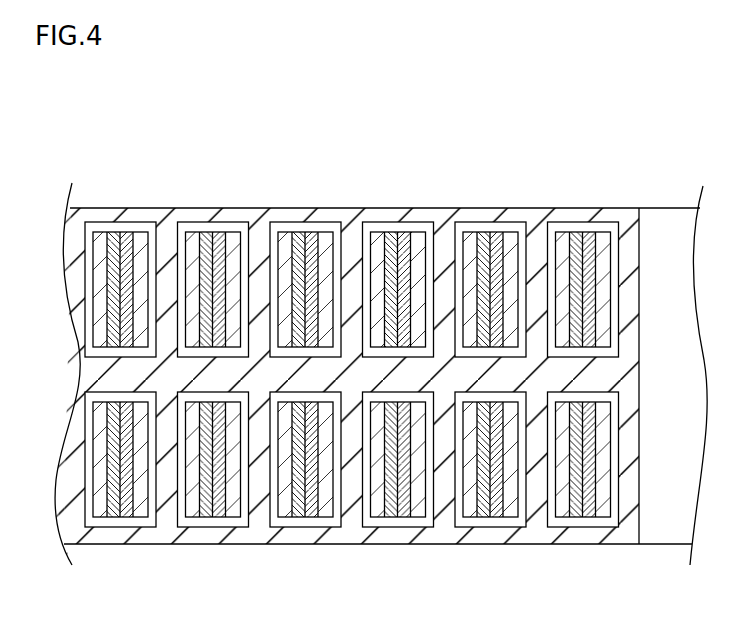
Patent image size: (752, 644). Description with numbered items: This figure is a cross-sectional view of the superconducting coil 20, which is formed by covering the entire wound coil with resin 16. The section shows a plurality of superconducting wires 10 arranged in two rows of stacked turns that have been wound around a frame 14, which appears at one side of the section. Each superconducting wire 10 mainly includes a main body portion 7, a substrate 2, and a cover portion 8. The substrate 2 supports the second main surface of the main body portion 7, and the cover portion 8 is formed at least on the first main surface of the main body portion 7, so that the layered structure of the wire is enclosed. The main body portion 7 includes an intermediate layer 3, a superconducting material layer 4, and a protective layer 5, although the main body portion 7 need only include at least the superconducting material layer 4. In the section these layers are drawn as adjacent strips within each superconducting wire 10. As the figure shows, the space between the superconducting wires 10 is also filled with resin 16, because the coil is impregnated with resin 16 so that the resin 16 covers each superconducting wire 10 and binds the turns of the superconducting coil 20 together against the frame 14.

The substrate 2 is at (377, 233).
The intermediate layer 3 is at (391, 233).
The superconducting material layer 4 is at (403, 233).
The protective layer 5 is at (417, 233).
The main body portion 7 is at (357, 135).
The cover portion 8 is at (413, 222).
The superconducting wire 10 is at (126, 215).
The frame 14 is at (670, 208).
The resin 16 is at (627, 214).
The superconducting coil 20 is at (140, 105).